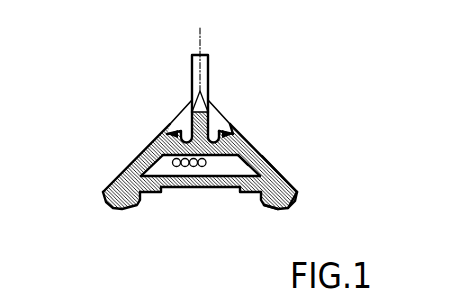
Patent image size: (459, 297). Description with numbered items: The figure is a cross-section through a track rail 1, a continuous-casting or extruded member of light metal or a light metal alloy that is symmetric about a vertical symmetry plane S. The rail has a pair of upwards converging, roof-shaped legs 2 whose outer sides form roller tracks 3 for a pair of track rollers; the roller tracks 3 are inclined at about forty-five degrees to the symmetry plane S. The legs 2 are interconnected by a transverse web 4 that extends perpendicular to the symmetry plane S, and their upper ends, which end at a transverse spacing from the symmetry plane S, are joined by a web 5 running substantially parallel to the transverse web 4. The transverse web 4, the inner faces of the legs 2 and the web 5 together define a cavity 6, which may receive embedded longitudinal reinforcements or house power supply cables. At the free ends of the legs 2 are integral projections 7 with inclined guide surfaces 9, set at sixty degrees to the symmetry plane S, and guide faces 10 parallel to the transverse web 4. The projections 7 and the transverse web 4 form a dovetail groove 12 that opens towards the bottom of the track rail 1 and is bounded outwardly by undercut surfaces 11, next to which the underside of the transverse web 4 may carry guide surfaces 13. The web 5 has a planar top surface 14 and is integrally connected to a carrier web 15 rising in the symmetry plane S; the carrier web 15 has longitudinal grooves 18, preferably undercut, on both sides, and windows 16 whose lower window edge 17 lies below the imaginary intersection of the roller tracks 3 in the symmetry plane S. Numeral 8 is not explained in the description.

The track rail 1 is at (286, 170).
The legs 2 is at (133, 158).
The roller tracks 3 is at (118, 176).
The transverse web 4 is at (186, 168).
The web 5 is at (207, 158).
The cavity 6 is at (231, 158).
The projections 7 is at (113, 209).
The base plate 8 is at (177, 190).
The inclined guide surfaces 9 is at (299, 195).
The guide faces 10 is at (266, 207).
The undercut surfaces 11 is at (151, 195).
The dovetail groove 12 is at (245, 196).
The guide surfaces 13 is at (290, 184).
The planar top surface 14 is at (180, 127).
The carrier web 15 is at (211, 117).
The windows 16 is at (197, 73).
The lower window edge 17 is at (200, 118).
The longitudinal grooves 18 is at (243, 131).
The symmetry plane S is at (219, 49).